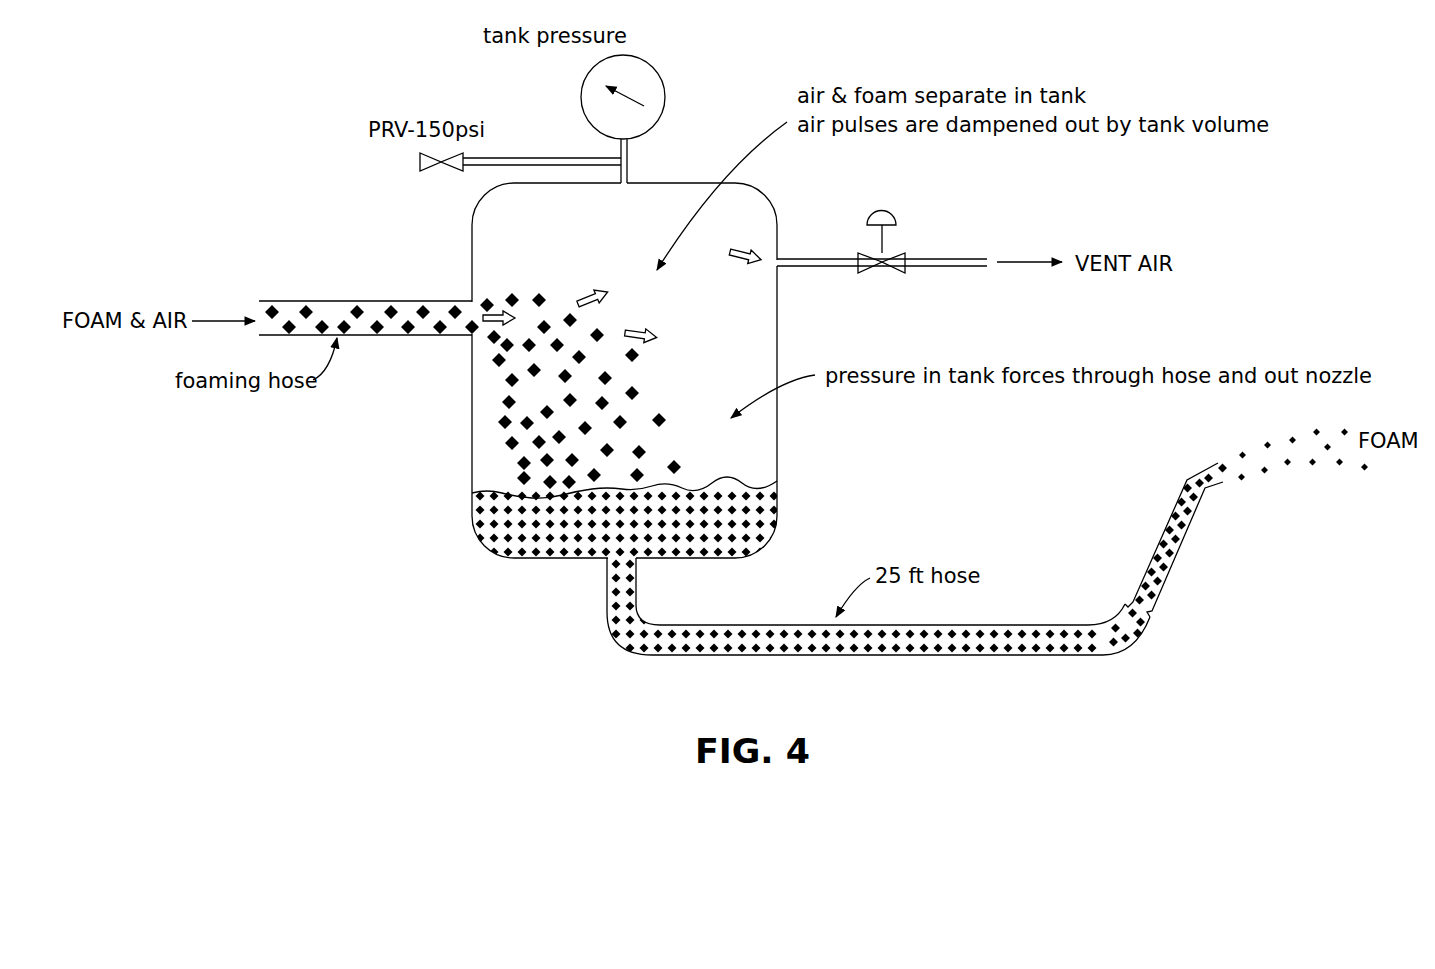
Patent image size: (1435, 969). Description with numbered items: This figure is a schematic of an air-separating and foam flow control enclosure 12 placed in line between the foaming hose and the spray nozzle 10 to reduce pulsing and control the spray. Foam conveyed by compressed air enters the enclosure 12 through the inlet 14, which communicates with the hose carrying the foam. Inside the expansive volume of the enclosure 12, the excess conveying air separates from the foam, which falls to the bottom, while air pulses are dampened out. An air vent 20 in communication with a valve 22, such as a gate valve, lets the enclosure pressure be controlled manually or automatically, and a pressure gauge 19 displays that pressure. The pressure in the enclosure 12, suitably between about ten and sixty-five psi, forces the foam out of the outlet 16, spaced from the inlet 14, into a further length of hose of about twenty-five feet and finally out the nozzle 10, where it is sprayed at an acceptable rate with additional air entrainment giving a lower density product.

The nozzle 10 is at (1186, 550).
The air-separating and foam flow control enclosure 12 is at (436, 503).
The inlet 14 is at (484, 290).
The outlet 16 is at (603, 566).
The pressure gauge 19 is at (652, 88).
The air vent 20 is at (782, 252).
The valve 22 is at (893, 248).